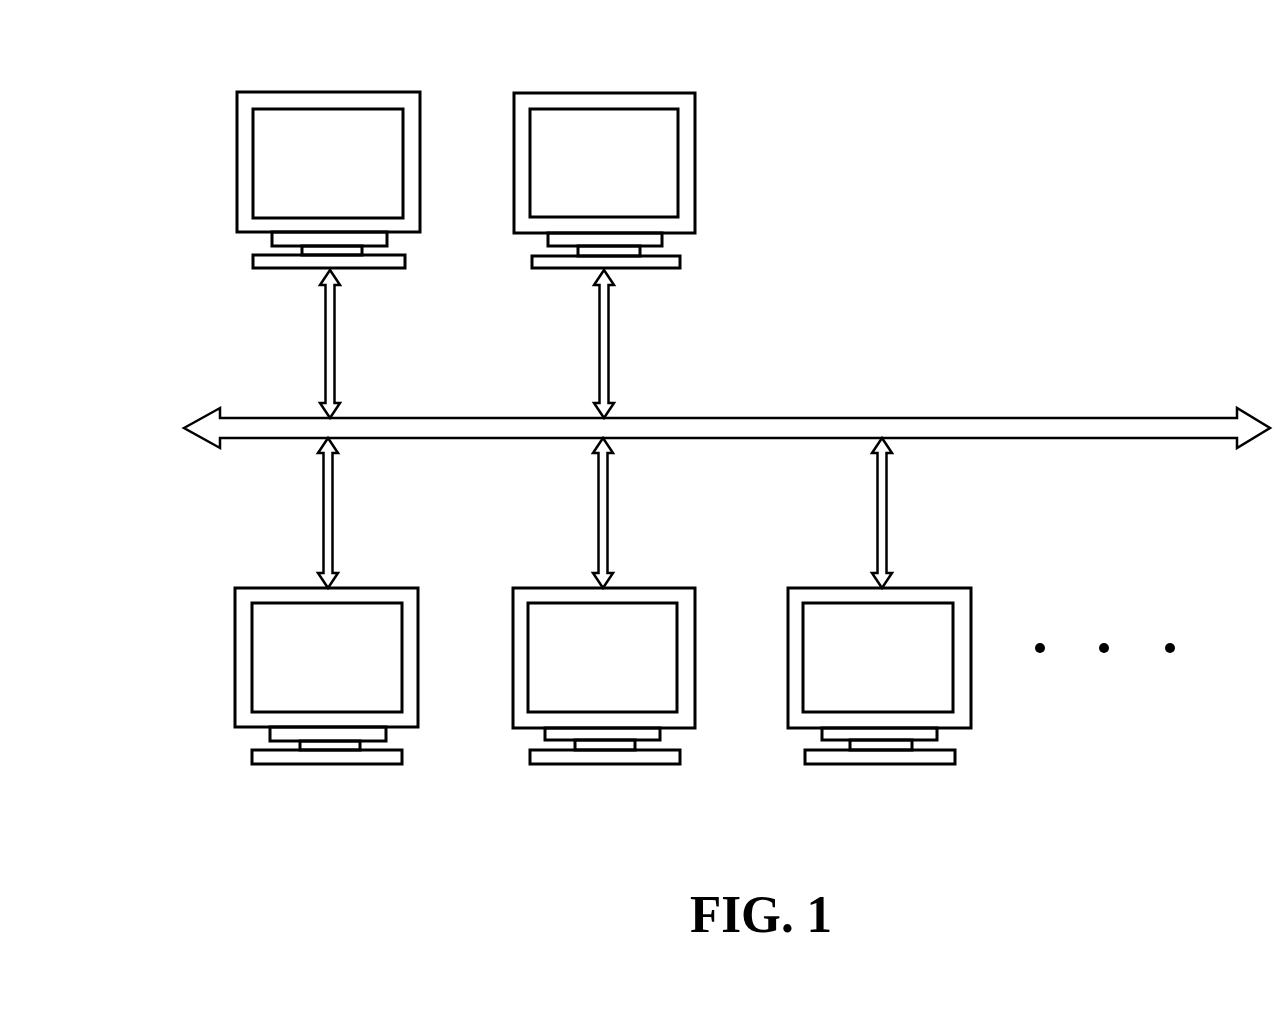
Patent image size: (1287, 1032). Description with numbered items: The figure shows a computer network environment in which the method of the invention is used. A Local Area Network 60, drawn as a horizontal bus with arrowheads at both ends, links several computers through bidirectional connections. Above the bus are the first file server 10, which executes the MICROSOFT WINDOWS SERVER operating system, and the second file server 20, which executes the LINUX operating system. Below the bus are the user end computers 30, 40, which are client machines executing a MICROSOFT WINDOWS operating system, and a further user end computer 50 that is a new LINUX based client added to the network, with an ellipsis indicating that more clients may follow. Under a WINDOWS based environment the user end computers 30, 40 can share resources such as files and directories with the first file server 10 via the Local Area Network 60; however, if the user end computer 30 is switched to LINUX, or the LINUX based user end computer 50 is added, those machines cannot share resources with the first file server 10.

The first file server 10 is at (325, 133).
The second file server 20 is at (603, 142).
The user end computer 30 is at (275, 652).
The user end computer 40 is at (640, 630).
The user end computer 50 is at (918, 630).
The Local Area Network 60 is at (1125, 428).